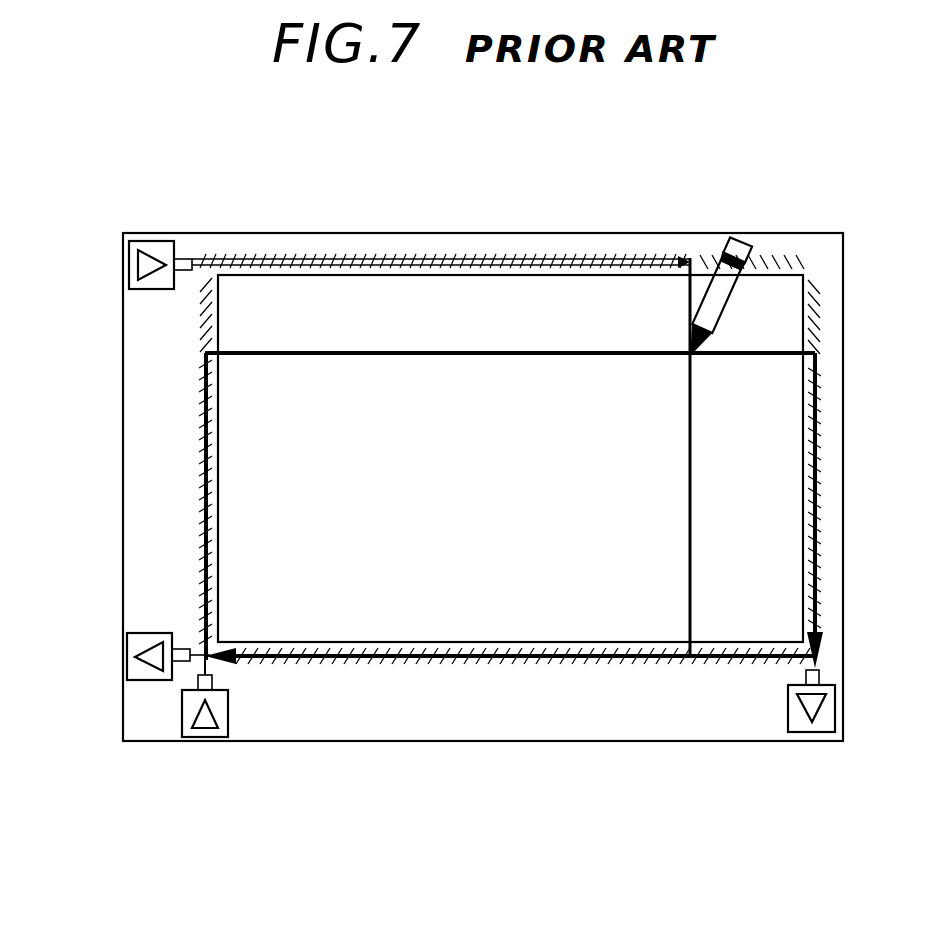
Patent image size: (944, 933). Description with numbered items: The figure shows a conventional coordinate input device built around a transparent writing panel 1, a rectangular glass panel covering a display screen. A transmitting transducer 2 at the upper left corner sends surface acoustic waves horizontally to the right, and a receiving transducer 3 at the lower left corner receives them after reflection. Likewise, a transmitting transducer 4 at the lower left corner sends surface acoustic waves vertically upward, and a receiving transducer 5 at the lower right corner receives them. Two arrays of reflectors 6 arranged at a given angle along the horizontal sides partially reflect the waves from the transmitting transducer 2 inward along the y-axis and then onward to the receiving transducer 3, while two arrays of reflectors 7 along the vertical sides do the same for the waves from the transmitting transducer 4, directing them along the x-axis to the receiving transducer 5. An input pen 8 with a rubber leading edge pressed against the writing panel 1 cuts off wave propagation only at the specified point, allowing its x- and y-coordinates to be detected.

The transparent writing panel 1 is at (454, 222).
The transmitting transducer 2 is at (162, 249).
The receiving transducer 3 is at (140, 672).
The transmitting transducer 4 is at (222, 700).
The receiving transducer 5 is at (826, 721).
The reflectors 6 is at (773, 244).
The reflectors 7 is at (180, 326).
The input pen 8 is at (722, 276).